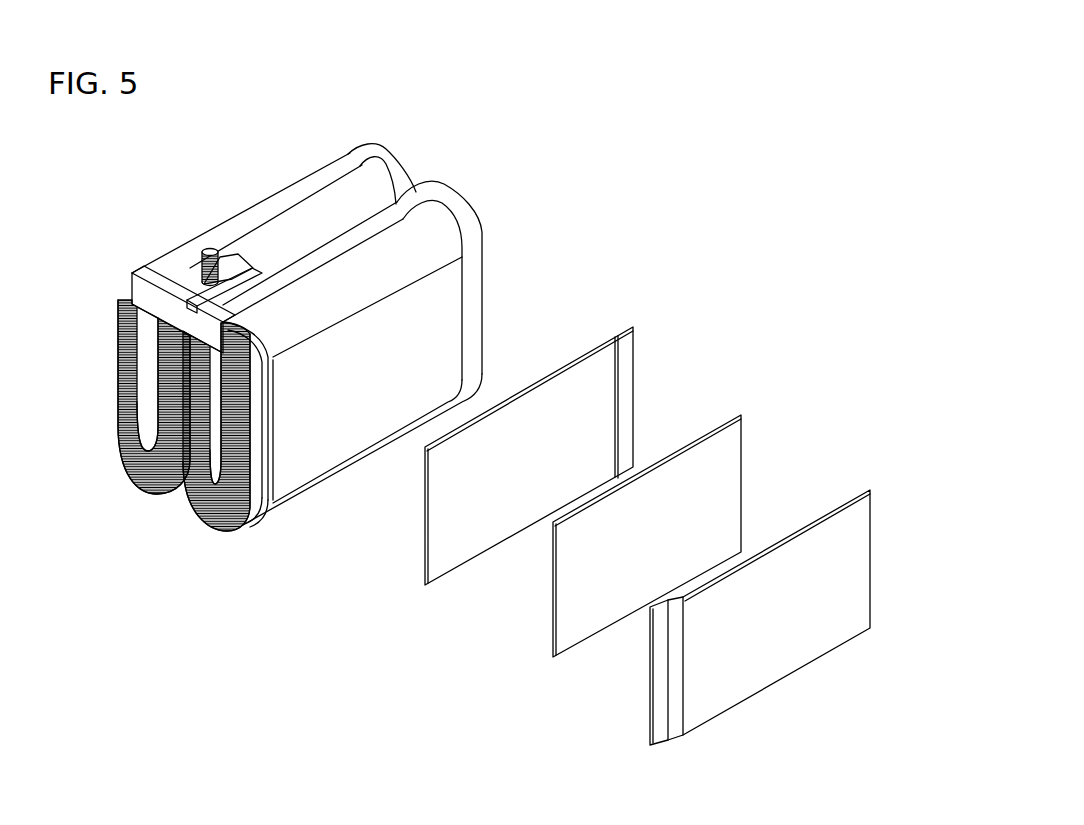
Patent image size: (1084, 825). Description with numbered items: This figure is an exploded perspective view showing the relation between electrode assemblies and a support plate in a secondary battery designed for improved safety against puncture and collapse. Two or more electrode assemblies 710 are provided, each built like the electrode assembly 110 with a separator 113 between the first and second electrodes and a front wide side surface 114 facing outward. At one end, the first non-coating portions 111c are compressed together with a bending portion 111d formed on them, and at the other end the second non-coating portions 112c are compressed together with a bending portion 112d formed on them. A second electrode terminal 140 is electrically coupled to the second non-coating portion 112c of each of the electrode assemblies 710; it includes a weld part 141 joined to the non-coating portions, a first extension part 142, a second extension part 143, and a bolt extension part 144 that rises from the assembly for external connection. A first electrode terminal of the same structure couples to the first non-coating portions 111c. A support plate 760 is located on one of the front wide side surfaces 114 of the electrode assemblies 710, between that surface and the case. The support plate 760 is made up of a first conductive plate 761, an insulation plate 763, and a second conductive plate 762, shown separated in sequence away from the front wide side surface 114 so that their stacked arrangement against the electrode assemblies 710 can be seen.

The electrode assemblies 710 is at (316, 349).
The electrode assembly 110 is at (351, 349).
The separator 113 is at (303, 217).
The front wide side surface 114 is at (335, 432).
The first non-coating portion 111c is at (397, 172).
The bending portion 111d is at (473, 287).
The second non-coating portion 112c is at (252, 513).
The bending portion 112d is at (271, 473).
The second electrode terminal 140 is at (212, 248).
The weld part 141 is at (147, 394).
The first extension part 142 is at (142, 308).
The second extension part 143 is at (190, 282).
The bolt extension part 144 is at (213, 257).
The support plate 760 is at (696, 528).
The first conductive plate 761 is at (640, 392).
The second conductive plate 762 is at (888, 545).
The insulation plate 763 is at (733, 457).